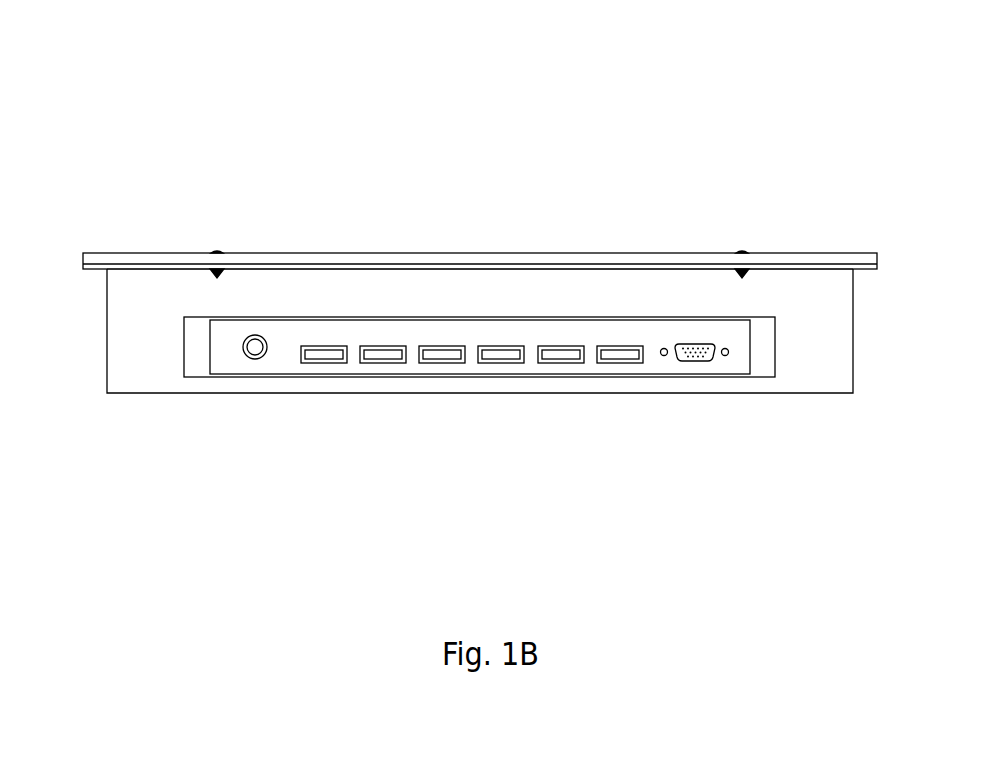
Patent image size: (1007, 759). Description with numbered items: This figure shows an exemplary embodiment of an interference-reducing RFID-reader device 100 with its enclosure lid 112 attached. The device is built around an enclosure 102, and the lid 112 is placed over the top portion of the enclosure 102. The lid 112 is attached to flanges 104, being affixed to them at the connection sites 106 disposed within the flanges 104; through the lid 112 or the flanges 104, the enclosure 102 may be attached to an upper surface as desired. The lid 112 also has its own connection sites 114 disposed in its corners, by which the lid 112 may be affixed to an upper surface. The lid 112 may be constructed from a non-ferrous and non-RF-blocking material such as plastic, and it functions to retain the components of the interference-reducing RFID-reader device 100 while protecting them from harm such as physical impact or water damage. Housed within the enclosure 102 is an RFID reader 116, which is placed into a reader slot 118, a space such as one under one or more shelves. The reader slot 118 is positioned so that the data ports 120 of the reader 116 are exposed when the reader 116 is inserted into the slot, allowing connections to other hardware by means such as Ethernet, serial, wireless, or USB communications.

The interference-reducing RFID-reader device 100 is at (448, 273).
The enclosure 102 is at (157, 357).
The flanges 104 is at (338, 287).
The connection sites 106 is at (205, 273).
The enclosure lid 112 is at (498, 257).
The connection sites 114 is at (742, 253).
The RFID reader 116 is at (284, 367).
The reader slot 118 is at (203, 346).
The data ports 120 is at (680, 362).